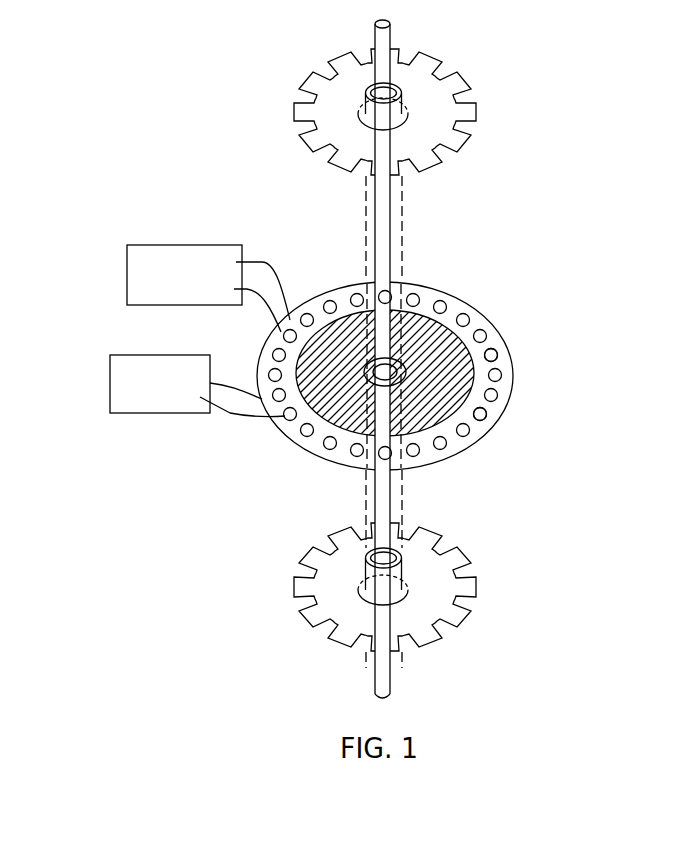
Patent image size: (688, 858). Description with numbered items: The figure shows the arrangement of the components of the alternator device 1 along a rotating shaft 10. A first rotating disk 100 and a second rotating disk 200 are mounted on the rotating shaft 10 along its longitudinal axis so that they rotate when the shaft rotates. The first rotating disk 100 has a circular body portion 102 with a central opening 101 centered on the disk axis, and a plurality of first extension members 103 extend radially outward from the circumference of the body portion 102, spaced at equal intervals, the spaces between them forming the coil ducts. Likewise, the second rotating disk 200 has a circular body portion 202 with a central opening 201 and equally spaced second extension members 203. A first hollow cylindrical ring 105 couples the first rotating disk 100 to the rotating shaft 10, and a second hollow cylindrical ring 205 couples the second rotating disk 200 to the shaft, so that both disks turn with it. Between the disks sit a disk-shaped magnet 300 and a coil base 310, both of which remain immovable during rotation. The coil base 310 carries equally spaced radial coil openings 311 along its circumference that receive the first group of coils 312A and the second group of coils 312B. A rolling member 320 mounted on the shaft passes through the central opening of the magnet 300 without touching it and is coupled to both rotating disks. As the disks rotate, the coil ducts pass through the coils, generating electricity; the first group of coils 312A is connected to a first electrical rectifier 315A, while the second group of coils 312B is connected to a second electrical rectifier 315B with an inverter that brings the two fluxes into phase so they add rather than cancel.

The device 1 is at (182, 84).
The rotating shaft 10 is at (396, 46).
The first rotating disk 100 is at (423, 88).
The central opening 101 is at (428, 128).
The circular body portion 102 is at (445, 108).
The first extension members 103 is at (425, 107).
The first hollow cylindrical ring 105 is at (367, 108).
The second rotating disk 200 is at (407, 612).
The central opening 201 is at (400, 588).
The circular body portion 202 is at (430, 595).
The second extension members 203 is at (472, 580).
The second hollow cylindrical ring 205 is at (366, 570).
The magnet 300 is at (472, 383).
The coil base 310 is at (444, 291).
The coil openings 311 is at (488, 352).
The first group of coils 312A is at (230, 412).
The second group of coils 312B is at (294, 297).
The first electrical rectifier 315A is at (110, 394).
The second electrical rectifier 315B is at (127, 260).
The rolling member 320 is at (397, 363).